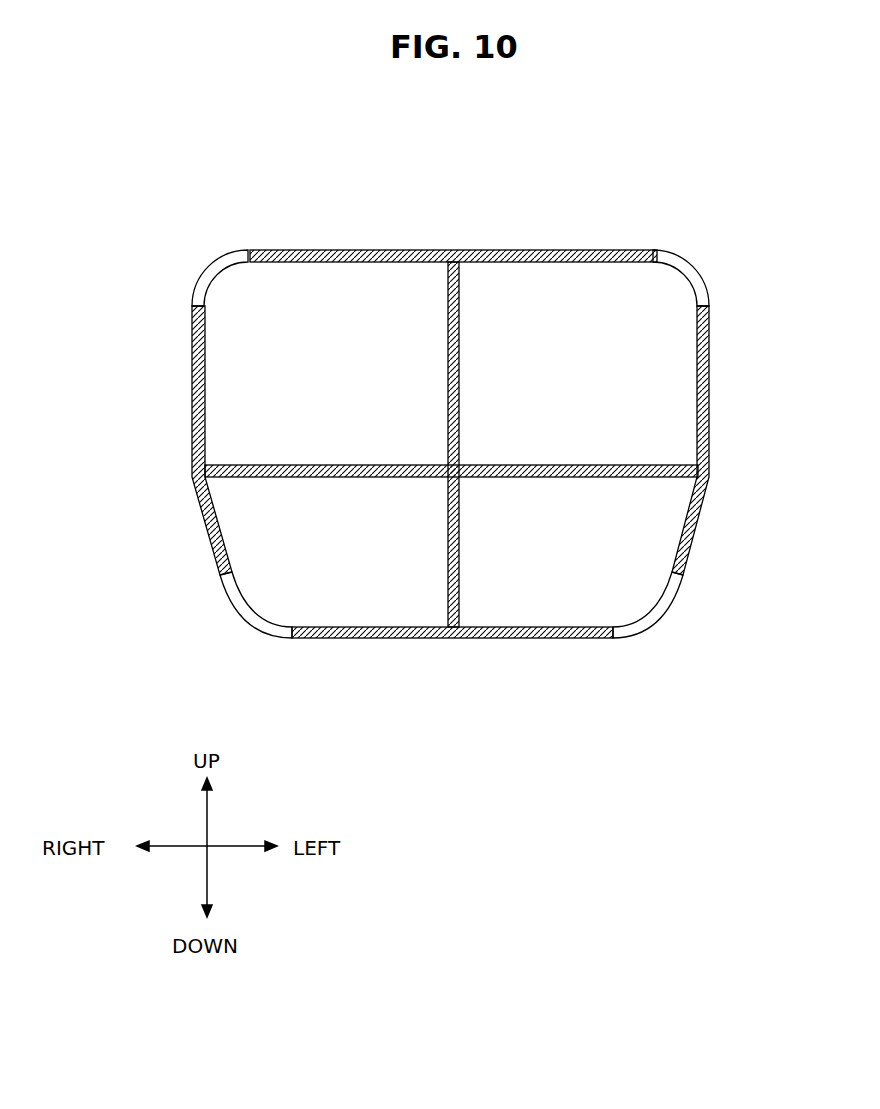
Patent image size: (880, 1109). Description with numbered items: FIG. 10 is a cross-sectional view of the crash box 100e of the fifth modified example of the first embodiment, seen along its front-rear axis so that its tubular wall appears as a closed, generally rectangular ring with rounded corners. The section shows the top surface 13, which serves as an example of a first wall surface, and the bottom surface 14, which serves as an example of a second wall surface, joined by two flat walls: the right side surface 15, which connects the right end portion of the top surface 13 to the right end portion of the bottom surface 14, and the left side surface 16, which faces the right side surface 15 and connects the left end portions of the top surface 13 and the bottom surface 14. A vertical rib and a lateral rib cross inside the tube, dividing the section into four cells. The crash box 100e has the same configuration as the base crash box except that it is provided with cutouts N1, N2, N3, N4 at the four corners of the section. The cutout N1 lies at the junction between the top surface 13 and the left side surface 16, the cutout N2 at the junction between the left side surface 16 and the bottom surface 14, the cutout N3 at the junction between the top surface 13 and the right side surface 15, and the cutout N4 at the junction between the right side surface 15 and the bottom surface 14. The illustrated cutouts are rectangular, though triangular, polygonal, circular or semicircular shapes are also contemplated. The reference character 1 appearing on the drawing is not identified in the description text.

The crash box 100e is at (624, 218).
The frame body 1 is at (517, 250).
The top surface 13 is at (456, 250).
The bottom surface 14 is at (452, 638).
The right side surface 15 is at (192, 410).
The left side surface 16 is at (709, 412).
The cutout N1 is at (693, 266).
The cutout N2 is at (655, 610).
The cutout N3 is at (198, 263).
The cutout N4 is at (247, 610).